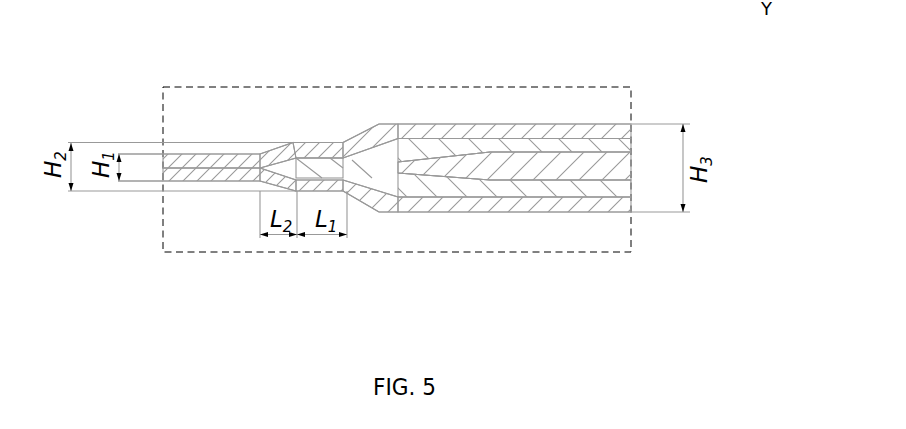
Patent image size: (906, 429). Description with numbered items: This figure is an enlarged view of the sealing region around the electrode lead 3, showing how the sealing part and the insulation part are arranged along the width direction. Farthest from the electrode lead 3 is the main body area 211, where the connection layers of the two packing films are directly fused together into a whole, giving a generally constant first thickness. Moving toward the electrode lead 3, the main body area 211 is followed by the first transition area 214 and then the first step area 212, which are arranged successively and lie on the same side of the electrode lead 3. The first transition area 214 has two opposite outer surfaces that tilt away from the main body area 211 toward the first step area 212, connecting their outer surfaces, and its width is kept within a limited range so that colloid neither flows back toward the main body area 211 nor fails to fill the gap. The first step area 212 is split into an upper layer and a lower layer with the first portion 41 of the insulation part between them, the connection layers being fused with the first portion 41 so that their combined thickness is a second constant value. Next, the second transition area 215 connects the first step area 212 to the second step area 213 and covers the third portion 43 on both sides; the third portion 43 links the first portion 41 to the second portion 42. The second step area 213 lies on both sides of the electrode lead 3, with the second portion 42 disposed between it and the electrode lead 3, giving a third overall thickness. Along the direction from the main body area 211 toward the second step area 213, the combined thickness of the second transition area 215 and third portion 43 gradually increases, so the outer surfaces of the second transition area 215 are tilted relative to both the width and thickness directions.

The main body area 211 is at (198, 154).
The first transition area 214 is at (279, 148).
The first step area 212 is at (313, 143).
The first portion 41 is at (325, 162).
The second transition area 215 is at (372, 133).
The second portion 42 is at (460, 145).
The second step area 213 is at (513, 125).
The third portion 43 is at (375, 176).
The electrode lead 3 is at (553, 177).